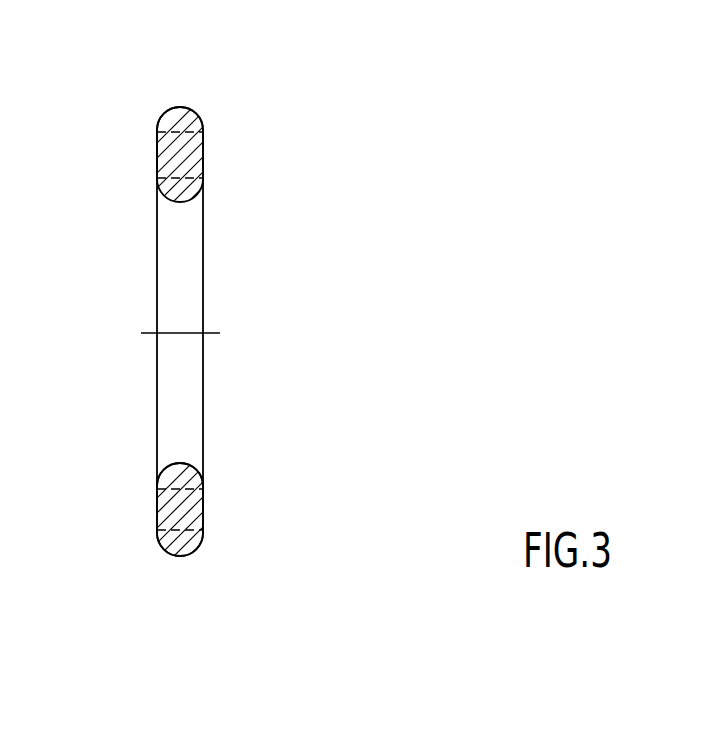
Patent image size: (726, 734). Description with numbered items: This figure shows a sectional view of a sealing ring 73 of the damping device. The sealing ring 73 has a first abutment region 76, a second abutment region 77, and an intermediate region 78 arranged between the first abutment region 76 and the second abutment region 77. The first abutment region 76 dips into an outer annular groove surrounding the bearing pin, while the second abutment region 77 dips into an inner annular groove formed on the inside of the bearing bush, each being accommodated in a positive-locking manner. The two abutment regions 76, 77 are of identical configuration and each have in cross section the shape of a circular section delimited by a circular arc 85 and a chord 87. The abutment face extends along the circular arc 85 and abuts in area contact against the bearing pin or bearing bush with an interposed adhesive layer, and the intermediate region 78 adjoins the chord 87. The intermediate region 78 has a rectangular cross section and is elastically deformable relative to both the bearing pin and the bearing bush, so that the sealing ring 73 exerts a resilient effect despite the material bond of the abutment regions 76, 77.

The sealing ring 73 is at (217, 125).
The first abutment region 76 is at (172, 196).
The second abutment region 77 is at (183, 118).
The intermediate region 78 is at (168, 161).
The circular arc 85 is at (173, 469).
The chord 87 is at (178, 491).